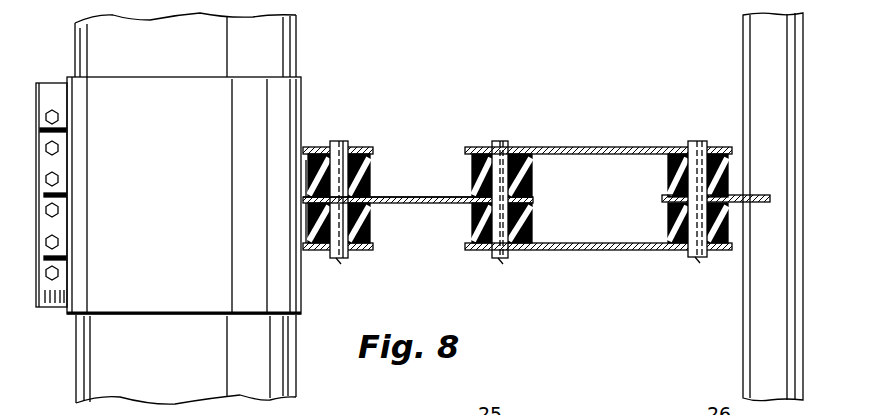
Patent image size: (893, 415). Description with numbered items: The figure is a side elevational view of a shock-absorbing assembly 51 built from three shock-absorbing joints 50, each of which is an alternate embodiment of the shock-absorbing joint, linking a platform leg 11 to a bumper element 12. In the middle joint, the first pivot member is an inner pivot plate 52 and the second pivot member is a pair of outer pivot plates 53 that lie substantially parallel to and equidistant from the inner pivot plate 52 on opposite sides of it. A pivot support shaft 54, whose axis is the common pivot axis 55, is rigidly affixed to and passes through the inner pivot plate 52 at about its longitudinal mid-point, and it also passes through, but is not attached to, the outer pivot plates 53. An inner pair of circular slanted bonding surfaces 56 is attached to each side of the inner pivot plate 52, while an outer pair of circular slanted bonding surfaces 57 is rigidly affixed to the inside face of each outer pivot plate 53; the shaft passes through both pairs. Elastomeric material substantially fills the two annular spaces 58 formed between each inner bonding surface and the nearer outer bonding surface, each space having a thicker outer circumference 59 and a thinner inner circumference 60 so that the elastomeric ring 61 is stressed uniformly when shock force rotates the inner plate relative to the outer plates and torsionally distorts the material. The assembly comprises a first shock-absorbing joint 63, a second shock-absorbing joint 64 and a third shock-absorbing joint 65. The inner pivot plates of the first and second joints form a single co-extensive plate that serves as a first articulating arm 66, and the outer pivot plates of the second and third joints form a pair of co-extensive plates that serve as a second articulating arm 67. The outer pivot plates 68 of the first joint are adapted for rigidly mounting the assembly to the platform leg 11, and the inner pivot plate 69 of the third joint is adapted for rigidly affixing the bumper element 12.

The platform leg 11 is at (293, 38).
The bumper element 12 is at (747, 62).
The shock-absorbing joint 50 is at (463, 167).
The shock-absorbing assembly 51 is at (504, 186).
The inner pivot plate 52 is at (415, 203).
The outer pivot plates 53 is at (598, 144).
The pivot support shaft 54 is at (342, 145).
The common pivot axis 55 is at (337, 140).
The inner pair of circular slanted bonding surfaces 56 is at (368, 172).
The outer pair of circular slanted bonding surfaces 57 is at (306, 165).
The annular spaces 58 is at (471, 175).
The thicker outer circumference 59 is at (532, 178).
The thinner inner circumference 60 is at (525, 245).
The ring 61 is at (663, 183).
The first shock-absorbing joint 63 is at (331, 258).
The second shock-absorbing joint 64 is at (503, 259).
The third shock-absorbing joint 65 is at (702, 257).
The first articulating arm 66 is at (426, 197).
The second articulating arm 67 is at (617, 133).
The outer pivot plates 68 is at (365, 150).
The inner pivot plate 69 is at (760, 195).